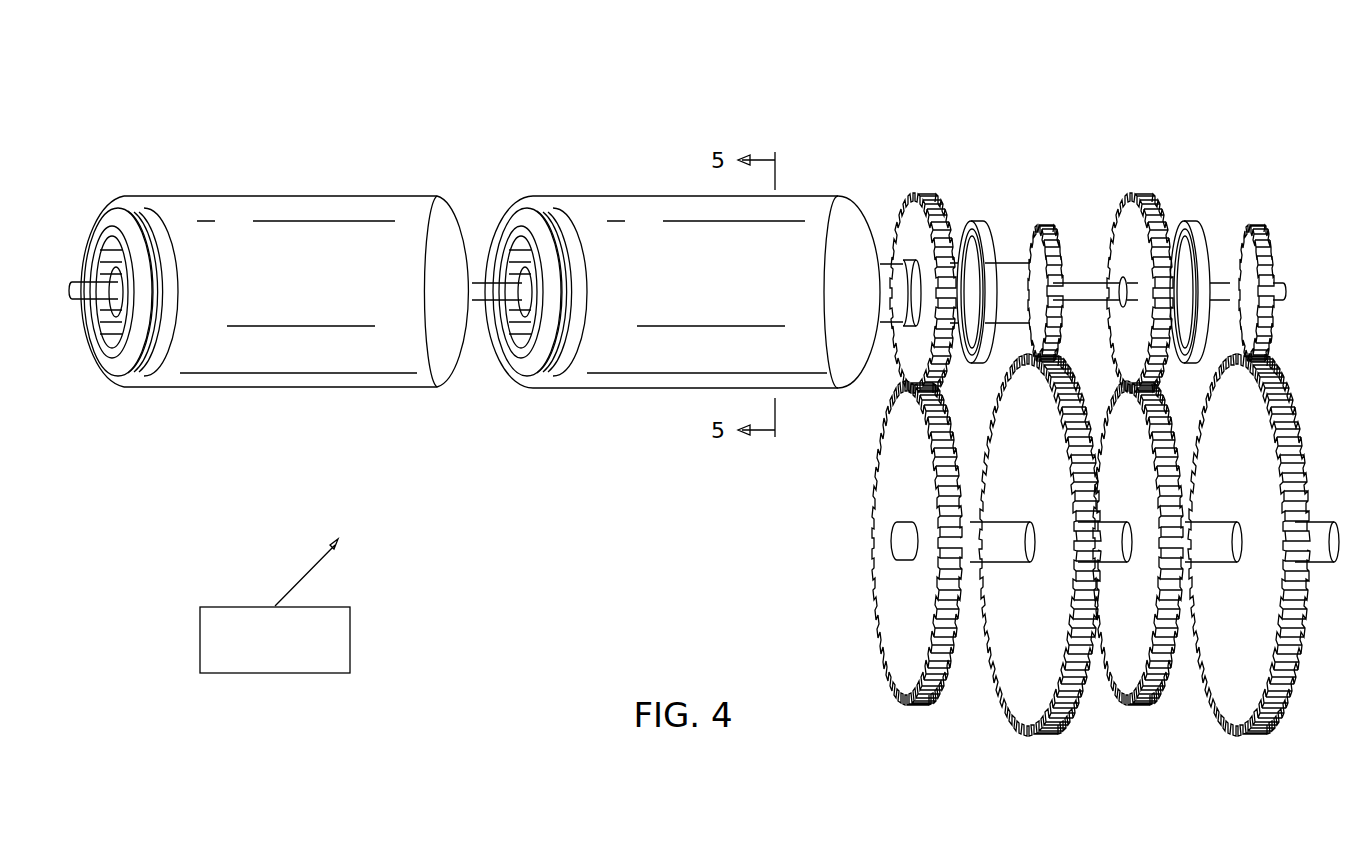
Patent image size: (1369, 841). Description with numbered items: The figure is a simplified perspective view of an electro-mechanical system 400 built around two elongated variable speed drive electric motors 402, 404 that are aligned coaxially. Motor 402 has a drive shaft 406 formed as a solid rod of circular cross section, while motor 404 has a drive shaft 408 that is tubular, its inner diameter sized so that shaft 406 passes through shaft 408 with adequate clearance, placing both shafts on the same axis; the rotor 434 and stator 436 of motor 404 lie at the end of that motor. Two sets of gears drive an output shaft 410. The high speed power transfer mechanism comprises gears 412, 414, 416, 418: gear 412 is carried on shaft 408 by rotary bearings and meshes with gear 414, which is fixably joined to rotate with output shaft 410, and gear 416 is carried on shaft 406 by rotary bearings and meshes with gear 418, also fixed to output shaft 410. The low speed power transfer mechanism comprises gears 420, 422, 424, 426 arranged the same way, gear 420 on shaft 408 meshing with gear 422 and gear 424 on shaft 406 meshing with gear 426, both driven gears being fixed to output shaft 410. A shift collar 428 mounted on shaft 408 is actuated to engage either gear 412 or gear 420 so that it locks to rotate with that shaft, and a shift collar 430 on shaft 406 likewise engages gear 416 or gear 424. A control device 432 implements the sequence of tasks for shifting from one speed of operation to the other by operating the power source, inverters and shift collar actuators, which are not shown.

The electro-mechanical system 400 is at (495, 86).
The elongated variable speed drive electric motor 402 is at (258, 182).
The elongated variable speed drive electric motor 404 is at (666, 183).
The drive shaft 406 is at (470, 278).
The drive shaft 408 is at (572, 285).
The output shaft 410 is at (1316, 565).
The gear 412 is at (915, 190).
The gear 414 is at (889, 620).
The gear 416 is at (1132, 192).
The gear 418 is at (1104, 620).
The gear 420 is at (1042, 228).
The gear 422 is at (1002, 620).
The gear 424 is at (1252, 228).
The gear 426 is at (1211, 620).
The shift collar 428 is at (974, 222).
The shift collar 430 is at (1186, 222).
The control device 432 is at (274, 676).
The rotor 434 is at (488, 222).
The stator 436 is at (547, 202).